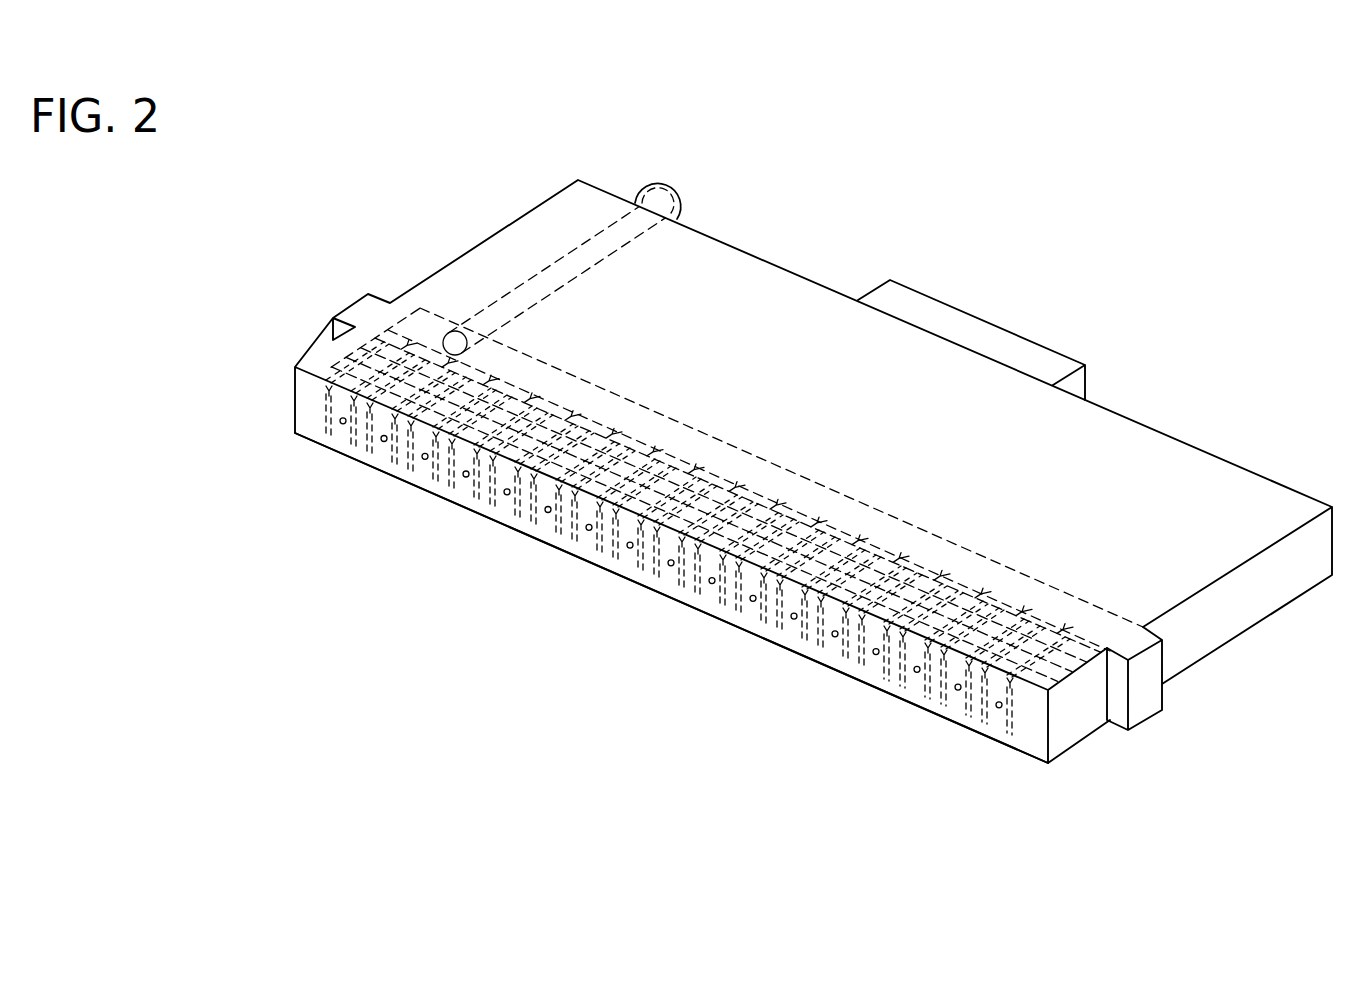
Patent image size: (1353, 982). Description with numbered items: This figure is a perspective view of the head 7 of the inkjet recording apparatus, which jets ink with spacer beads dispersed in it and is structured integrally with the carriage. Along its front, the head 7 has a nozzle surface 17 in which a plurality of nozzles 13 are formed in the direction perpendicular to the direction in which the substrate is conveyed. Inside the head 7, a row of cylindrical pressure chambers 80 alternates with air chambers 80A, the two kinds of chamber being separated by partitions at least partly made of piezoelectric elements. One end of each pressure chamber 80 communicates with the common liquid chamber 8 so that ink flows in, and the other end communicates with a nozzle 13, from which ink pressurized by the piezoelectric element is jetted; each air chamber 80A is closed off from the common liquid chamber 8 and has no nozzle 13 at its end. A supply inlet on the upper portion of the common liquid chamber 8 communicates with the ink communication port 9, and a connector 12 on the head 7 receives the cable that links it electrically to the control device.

The head 7 is at (772, 652).
The common liquid chamber 8 is at (690, 426).
The ink communication port 9 is at (646, 196).
The connector 12 is at (978, 318).
The nozzle 13 is at (341, 426).
The nozzle surface 17 is at (442, 497).
The pressure chamber 80 is at (340, 395).
The air chamber 80A is at (348, 378).